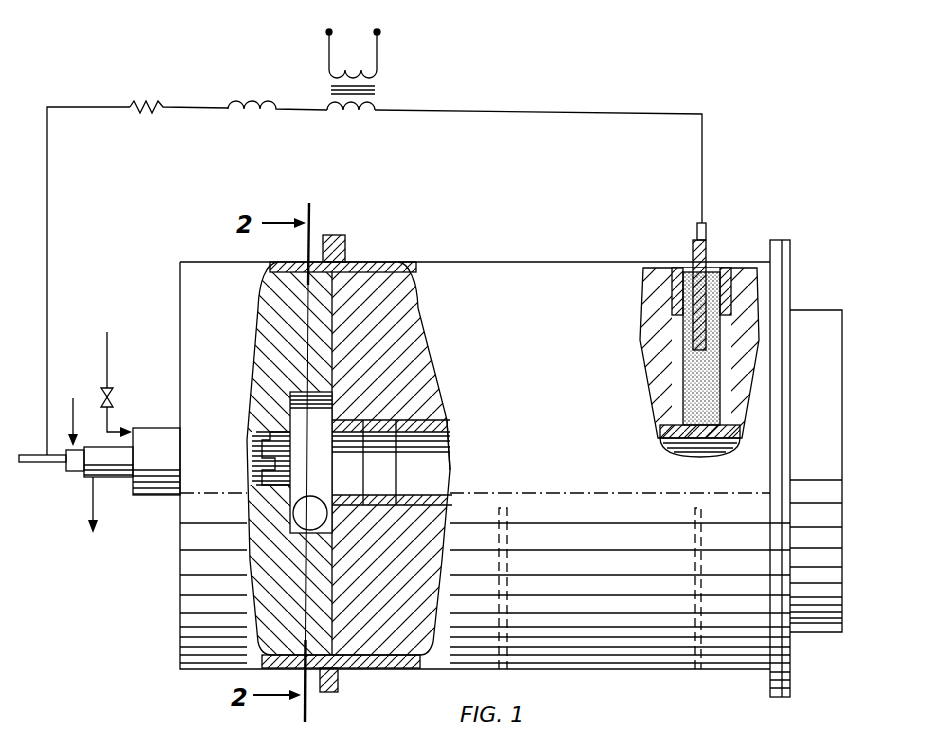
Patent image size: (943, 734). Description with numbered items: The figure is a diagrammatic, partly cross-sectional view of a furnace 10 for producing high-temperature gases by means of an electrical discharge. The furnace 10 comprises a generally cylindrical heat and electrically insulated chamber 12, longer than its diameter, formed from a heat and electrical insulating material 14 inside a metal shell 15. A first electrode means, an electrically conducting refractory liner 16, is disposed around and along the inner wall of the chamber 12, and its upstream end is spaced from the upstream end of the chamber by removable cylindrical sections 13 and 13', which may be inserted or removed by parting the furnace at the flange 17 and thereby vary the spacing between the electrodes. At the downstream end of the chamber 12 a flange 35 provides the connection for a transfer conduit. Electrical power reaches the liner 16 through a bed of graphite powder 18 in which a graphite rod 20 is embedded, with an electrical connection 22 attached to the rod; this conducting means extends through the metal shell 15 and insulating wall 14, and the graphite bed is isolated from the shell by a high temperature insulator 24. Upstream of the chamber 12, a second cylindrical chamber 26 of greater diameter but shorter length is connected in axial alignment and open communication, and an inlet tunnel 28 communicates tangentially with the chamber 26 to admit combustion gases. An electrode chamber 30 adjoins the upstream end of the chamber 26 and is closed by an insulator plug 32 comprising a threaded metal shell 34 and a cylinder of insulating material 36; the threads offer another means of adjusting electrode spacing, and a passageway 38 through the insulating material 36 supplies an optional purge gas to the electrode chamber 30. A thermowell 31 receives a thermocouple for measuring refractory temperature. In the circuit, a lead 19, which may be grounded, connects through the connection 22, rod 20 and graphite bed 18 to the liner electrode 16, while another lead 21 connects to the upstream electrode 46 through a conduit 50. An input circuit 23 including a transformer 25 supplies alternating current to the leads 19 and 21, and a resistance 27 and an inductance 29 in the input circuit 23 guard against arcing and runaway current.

The furnace 10 is at (172, 604).
The chamber 12 is at (445, 462).
The liner section 13 is at (383, 462).
The liner section 13' is at (351, 462).
The heat and electrical insulating material 14 is at (440, 340).
The metal shell 15 is at (387, 250).
The electrically conducting refractory liner 16 is at (440, 494).
The flange 17 is at (340, 684).
The bed of graphite powder 18 is at (712, 403).
The lead 19 is at (702, 146).
The graphite rod 20 is at (712, 258).
The lead 21 is at (48, 168).
The electrical connection 22 is at (707, 232).
The input circuit 23 is at (362, 112).
The high temperature insulator 24 is at (673, 268).
The transformer 25 is at (375, 82).
The chamber 26 is at (321, 444).
The resistance 27 is at (164, 109).
The inlet tunnel 28 is at (306, 508).
The inductance 29 is at (256, 112).
The electrode chamber 30 is at (250, 480).
The thermowell 31 is at (512, 508).
The insulator plug 32 is at (124, 490).
The metal shell 34 is at (146, 428).
The flange 35 is at (790, 672).
The insulating material 36 is at (130, 490).
The passageway 38 is at (116, 410).
The upstream electrode 46 is at (262, 440).
The conduit 50 is at (30, 465).